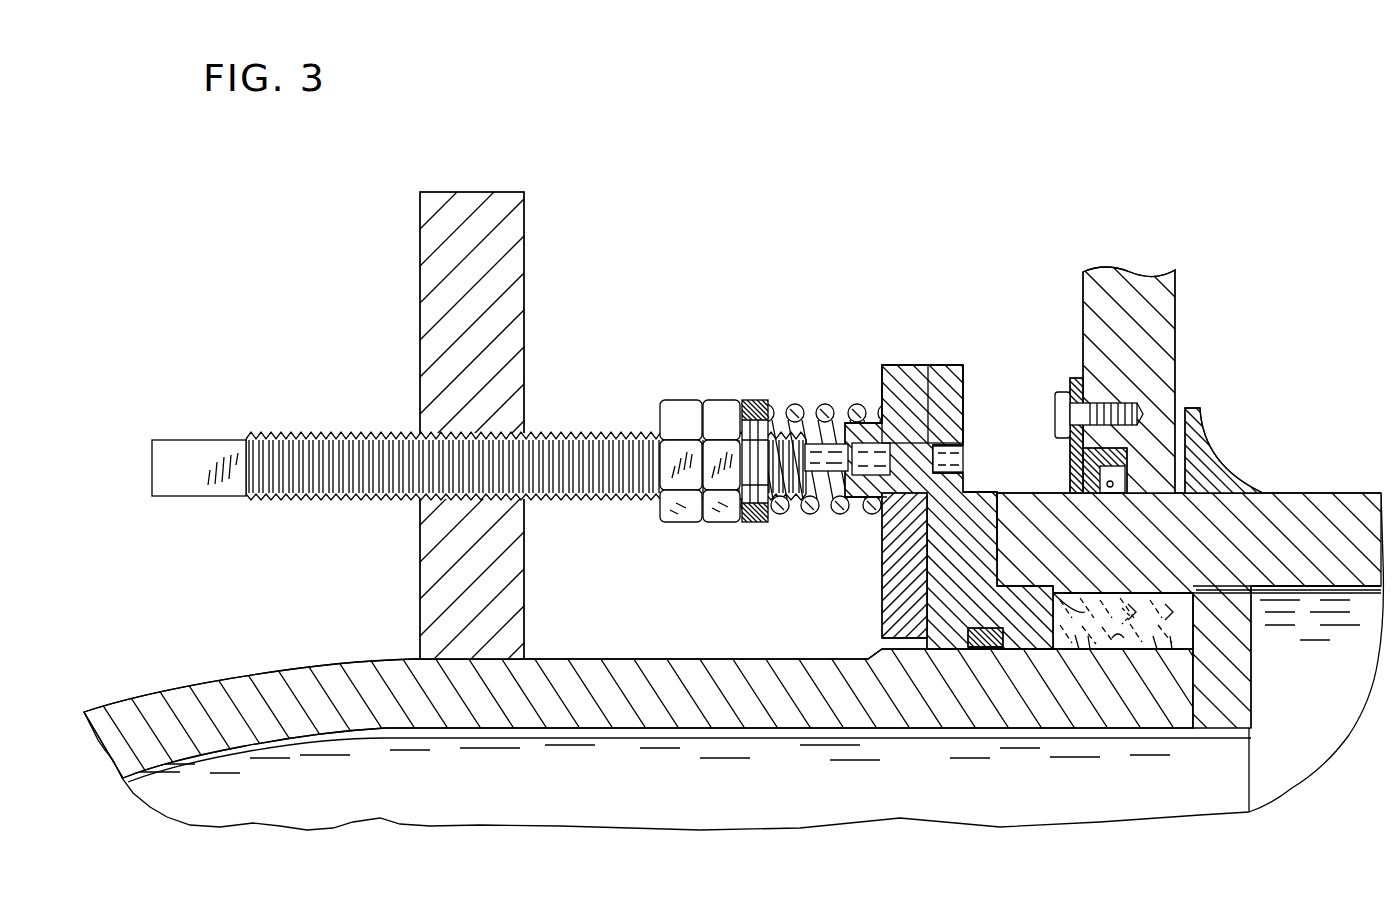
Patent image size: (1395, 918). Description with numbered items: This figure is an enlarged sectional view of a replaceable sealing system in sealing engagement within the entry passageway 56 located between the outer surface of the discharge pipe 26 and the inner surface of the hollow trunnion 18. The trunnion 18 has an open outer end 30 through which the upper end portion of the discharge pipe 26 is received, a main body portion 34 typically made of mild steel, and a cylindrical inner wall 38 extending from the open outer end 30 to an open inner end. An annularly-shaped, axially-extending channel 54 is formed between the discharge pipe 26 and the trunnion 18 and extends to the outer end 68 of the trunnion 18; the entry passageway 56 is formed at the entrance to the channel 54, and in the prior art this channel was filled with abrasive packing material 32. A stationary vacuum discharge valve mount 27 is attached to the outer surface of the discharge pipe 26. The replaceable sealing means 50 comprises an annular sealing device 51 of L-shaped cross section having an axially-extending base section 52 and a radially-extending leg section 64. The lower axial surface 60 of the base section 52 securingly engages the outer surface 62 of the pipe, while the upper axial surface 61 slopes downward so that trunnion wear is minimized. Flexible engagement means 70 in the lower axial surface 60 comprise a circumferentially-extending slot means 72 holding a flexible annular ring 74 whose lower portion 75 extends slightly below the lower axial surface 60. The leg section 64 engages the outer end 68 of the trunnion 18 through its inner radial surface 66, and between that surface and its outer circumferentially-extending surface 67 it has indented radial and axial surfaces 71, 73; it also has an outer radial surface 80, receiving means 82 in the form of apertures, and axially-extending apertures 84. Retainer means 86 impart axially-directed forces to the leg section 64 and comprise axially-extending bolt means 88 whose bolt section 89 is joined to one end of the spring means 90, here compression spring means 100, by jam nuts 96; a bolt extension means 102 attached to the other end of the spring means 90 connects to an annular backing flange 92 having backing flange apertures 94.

The hollow trunnion 18 is at (1333, 492).
The discharge pipe 26 is at (502, 736).
The vacuum discharge valve mount 27 is at (514, 302).
The open outer end 30 is at (1303, 716).
The packing material 32 is at (1088, 648).
The main body portion 34 is at (1353, 493).
The cylindrical inner wall 38 is at (1127, 593).
The replaceable sealing means 50 is at (1008, 557).
The sealing device 51 is at (923, 632).
The base section 52 is at (1093, 612).
The channel 54 is at (1172, 594).
The entry passageway 56 is at (1005, 588).
The lower axial surface 60 is at (1010, 650).
The upper axial surface 61 is at (1060, 595).
The outer surface 62 is at (1118, 650).
The leg section 64 is at (1018, 542).
The inner radial surface 66 is at (1020, 500).
The outer circumferentially-extending surface 67 is at (938, 365).
The outer end 68 is at (1003, 532).
The flexible engagement means 70 is at (993, 650).
The indented radial surface 71 is at (965, 388).
The slot means 72 is at (965, 641).
The indented axial surface 73 is at (985, 492).
The flexible annular ring 74 is at (980, 648).
The lower portion 75 is at (988, 650).
The outer radial surface 80 is at (940, 612).
The receiving means 82 is at (968, 457).
The axially-extending apertures 84 is at (972, 440).
The retainer means 86 is at (305, 530).
The bolt means 88 is at (208, 497).
The bolt section 89 is at (455, 480).
The spring means 90 is at (822, 398).
The backing flange 92 is at (880, 572).
The backing flange apertures 94 is at (905, 445).
The jam nuts 96 is at (721, 405).
The compression spring means 100 is at (760, 530).
The bolt extension means 102 is at (845, 523).